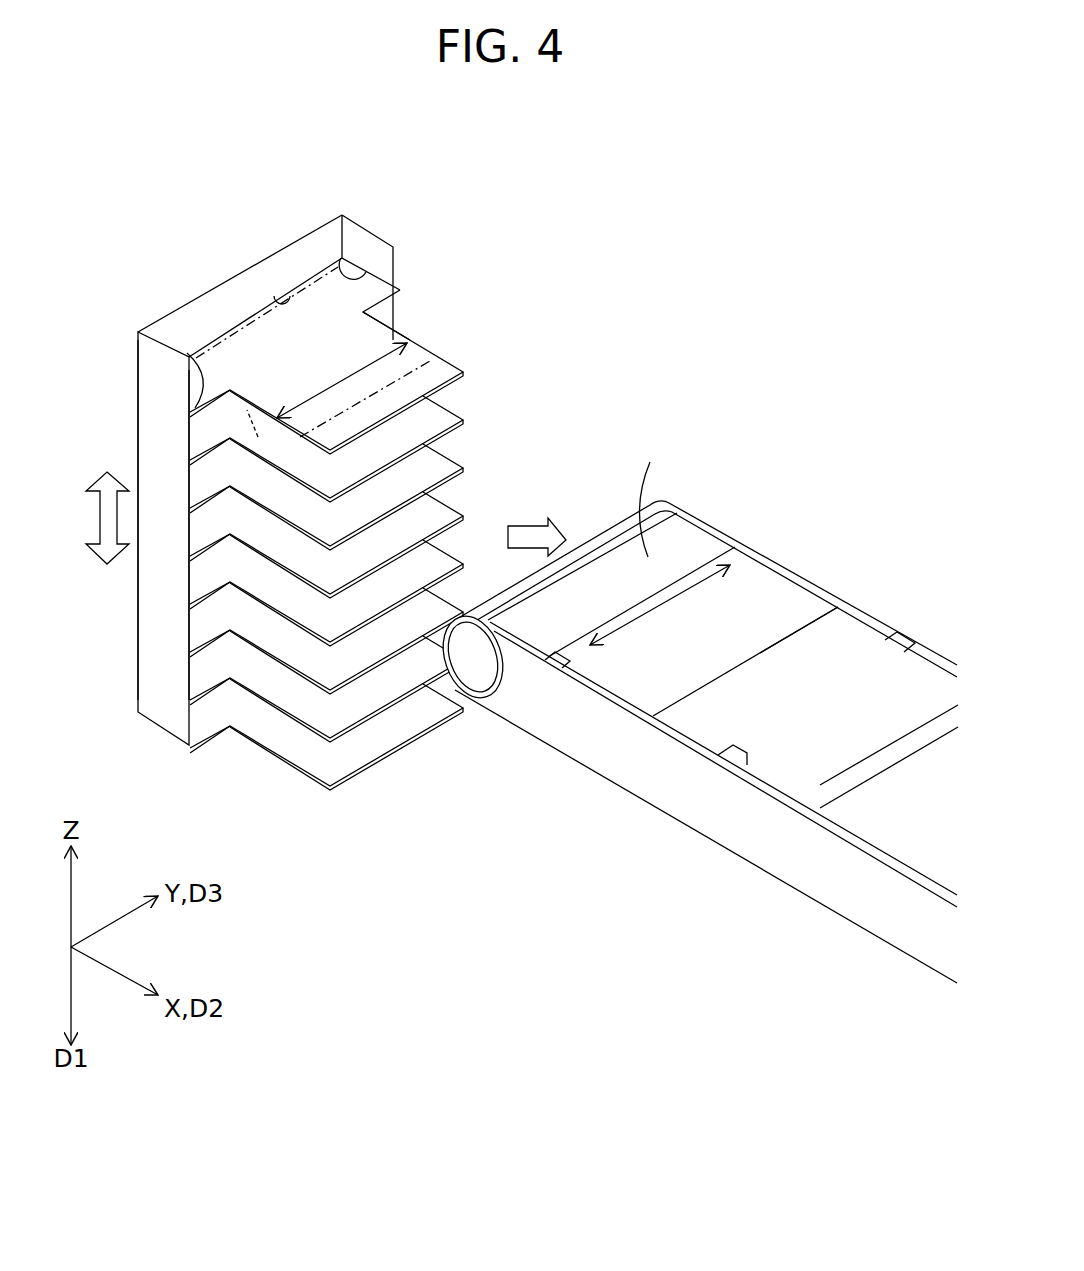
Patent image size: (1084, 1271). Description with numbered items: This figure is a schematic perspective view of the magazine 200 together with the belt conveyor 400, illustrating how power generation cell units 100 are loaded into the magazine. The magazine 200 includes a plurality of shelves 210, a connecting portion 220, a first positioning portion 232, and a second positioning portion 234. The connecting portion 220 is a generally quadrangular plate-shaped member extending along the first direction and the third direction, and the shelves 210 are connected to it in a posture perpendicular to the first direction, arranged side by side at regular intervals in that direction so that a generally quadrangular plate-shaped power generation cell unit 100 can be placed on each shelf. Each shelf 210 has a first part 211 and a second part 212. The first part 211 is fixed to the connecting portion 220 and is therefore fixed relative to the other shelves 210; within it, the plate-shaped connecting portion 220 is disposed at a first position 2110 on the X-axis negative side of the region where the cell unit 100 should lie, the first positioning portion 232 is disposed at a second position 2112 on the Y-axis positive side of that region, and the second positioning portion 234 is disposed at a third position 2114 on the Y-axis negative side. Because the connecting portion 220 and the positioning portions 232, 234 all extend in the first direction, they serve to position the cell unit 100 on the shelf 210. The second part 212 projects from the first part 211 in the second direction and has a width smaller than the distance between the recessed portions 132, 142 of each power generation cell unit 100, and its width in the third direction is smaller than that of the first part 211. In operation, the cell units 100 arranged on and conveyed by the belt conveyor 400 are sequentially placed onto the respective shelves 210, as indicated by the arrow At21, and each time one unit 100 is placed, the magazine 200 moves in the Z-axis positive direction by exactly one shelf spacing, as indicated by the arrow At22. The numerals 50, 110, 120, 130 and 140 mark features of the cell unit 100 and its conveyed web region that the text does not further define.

The label region 50 is at (712, 865).
The power generation cell unit 100 is at (682, 550).
The roll 110 is at (697, 697).
The liner web 120 is at (808, 800).
The web edge portion 130 is at (672, 740).
The recessed portion 132 is at (733, 763).
The label edge 140 is at (860, 620).
The recessed portion 142 is at (917, 647).
The magazine 200 is at (266, 455).
The shelf 210 is at (447, 360).
The first part 211 is at (327, 297).
The second part 212 is at (393, 310).
The connecting portion 220 is at (160, 315).
The first positioning portion 232 is at (368, 225).
The second positioning portion 234 is at (158, 365).
The first position 2110 is at (287, 293).
The second position 2112 is at (372, 270).
The third position 2114 is at (155, 345).
The belt conveyor 400 is at (888, 912).
The arrow At21 is at (563, 535).
The arrow At22 is at (100, 513).